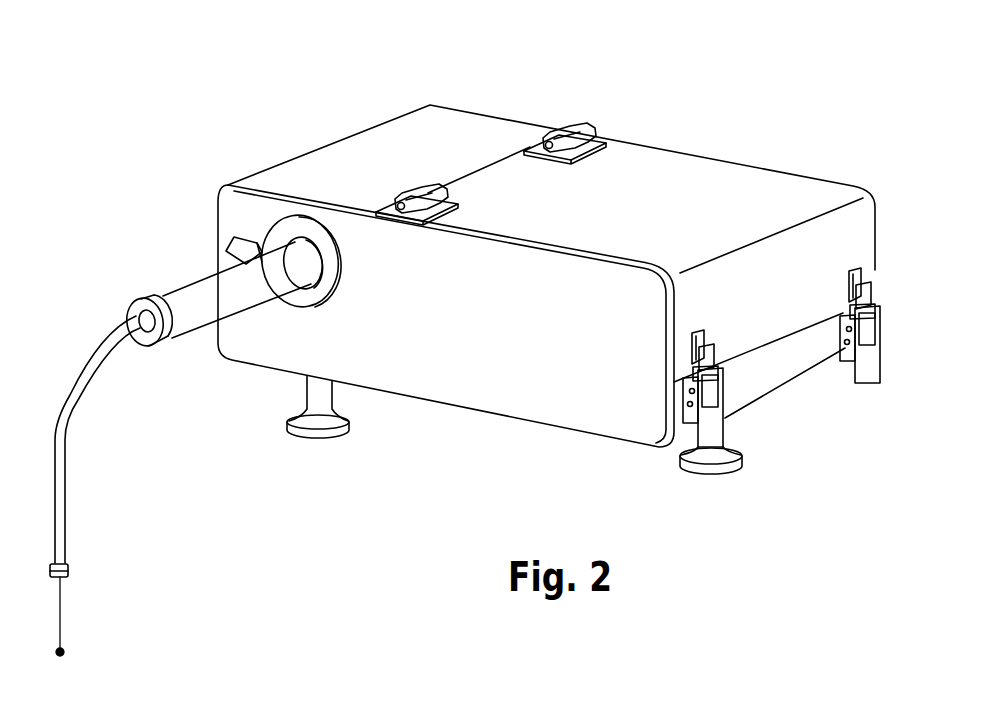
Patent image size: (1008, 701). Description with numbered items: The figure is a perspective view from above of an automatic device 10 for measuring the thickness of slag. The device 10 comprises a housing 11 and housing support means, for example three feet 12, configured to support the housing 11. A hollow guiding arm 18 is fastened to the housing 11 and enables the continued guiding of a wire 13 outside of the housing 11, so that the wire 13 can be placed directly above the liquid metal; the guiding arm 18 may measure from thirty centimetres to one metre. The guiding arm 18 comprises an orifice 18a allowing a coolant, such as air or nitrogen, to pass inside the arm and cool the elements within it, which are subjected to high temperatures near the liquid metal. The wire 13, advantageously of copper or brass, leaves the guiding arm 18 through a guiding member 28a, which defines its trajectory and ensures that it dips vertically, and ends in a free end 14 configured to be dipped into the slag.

The device for measuring the thickness of the slag 10 is at (644, 128).
The housing 11 is at (730, 200).
The feet 12 is at (323, 433).
The wire 13 is at (60, 616).
The free end 14 is at (63, 653).
The hollow guiding arm 18 is at (175, 297).
The orifice 18a is at (242, 243).
The guiding member 28a is at (68, 407).